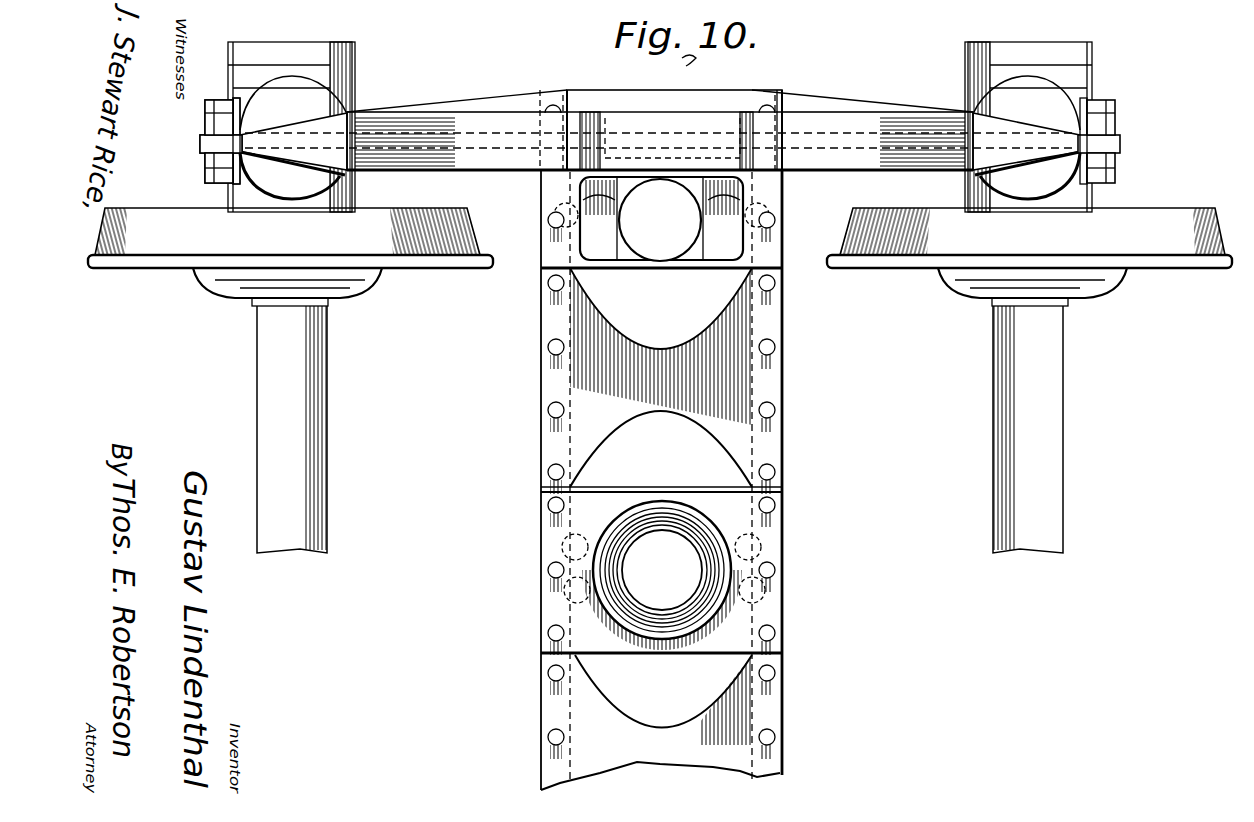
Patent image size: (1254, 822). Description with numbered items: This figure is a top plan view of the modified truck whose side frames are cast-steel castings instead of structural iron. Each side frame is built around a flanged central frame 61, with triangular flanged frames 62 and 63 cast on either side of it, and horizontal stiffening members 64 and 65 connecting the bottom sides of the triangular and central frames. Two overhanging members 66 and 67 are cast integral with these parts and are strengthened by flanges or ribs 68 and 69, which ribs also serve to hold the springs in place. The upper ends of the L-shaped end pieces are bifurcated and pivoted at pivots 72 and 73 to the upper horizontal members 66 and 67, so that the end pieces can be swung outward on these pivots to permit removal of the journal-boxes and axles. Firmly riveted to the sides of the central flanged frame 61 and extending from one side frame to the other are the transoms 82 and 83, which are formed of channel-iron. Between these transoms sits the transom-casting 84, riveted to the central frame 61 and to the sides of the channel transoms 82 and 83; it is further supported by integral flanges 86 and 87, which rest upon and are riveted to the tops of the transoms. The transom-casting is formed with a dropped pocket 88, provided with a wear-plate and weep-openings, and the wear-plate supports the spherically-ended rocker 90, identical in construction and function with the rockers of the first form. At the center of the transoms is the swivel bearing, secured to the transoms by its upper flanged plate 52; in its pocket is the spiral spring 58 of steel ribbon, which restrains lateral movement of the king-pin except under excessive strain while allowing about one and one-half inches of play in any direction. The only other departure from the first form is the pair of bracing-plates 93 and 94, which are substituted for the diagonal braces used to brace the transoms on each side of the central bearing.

The upper flanged plate 52 is at (732, 568).
The spiral spring 58 is at (694, 546).
The flanged central frame 61 is at (663, 130).
The triangular flanged frame 62 is at (458, 120).
The triangular flanged frame 63 is at (866, 125).
The horizontal stiffening member 64 is at (535, 102).
The horizontal stiffening member 65 is at (813, 104).
The overhanging member 66 is at (335, 128).
The overhanging member 67 is at (1022, 132).
The flange or rib 68 is at (312, 98).
The flange or rib 69 is at (1025, 130).
The pivot 72 is at (206, 124).
The pivot 73 is at (1098, 133).
The transom 82 is at (573, 100).
The transom 83 is at (766, 100).
The transom-casting 84 is at (637, 262).
The integral flange 86 is at (641, 480).
The integral flange 87 is at (770, 208).
The dropped pocket 88 is at (627, 252).
The rocker 90 is at (660, 220).
The bracing-plate 93 is at (570, 388).
The bracing-plate 94 is at (550, 763).